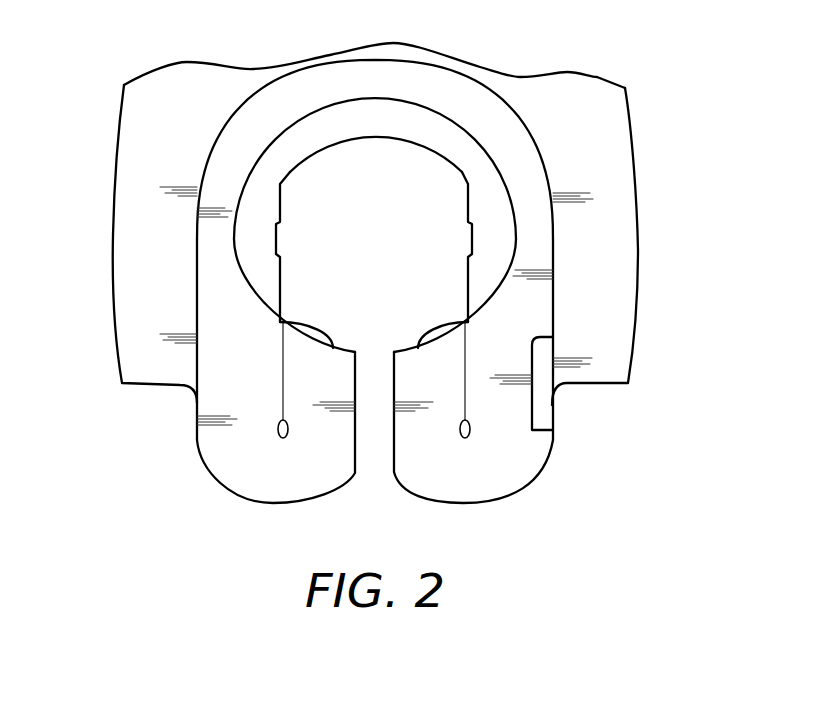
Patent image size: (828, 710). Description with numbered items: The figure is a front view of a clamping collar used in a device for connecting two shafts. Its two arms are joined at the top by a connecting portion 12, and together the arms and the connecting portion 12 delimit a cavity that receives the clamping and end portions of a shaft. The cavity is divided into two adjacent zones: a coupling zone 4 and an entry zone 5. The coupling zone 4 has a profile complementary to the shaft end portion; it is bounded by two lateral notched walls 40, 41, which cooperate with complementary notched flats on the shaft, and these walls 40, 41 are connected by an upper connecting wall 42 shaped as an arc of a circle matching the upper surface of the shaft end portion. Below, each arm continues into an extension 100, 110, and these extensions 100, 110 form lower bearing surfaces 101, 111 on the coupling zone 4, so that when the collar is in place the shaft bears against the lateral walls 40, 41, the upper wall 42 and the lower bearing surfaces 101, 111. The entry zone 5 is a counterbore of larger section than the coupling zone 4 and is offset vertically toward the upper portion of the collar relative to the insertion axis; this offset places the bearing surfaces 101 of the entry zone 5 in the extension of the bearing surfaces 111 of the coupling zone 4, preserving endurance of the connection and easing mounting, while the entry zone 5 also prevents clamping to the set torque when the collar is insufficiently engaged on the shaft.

The connecting portion 12 is at (333, 85).
The upper connecting wall 42 is at (418, 143).
The coupling zone 4 is at (300, 188).
The lateral notched wall 40 is at (278, 238).
The lateral notched wall 41 is at (473, 232).
The entry zone 5 is at (256, 276).
The lower bearing surface 101 is at (278, 313).
The lower bearing surface 111 is at (470, 315).
The extension 100 is at (320, 437).
The extension 110 is at (420, 435).